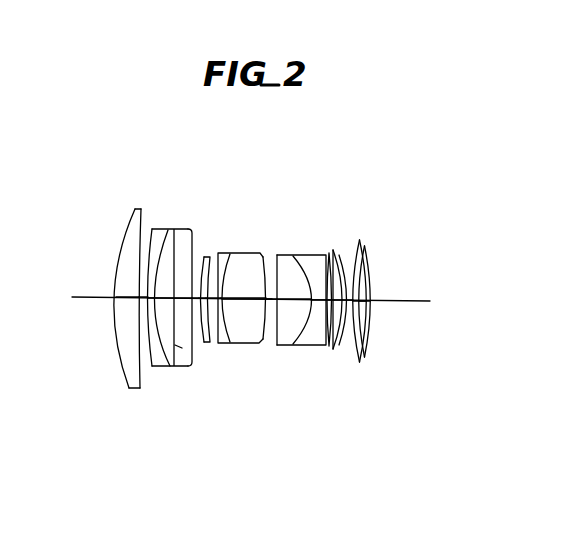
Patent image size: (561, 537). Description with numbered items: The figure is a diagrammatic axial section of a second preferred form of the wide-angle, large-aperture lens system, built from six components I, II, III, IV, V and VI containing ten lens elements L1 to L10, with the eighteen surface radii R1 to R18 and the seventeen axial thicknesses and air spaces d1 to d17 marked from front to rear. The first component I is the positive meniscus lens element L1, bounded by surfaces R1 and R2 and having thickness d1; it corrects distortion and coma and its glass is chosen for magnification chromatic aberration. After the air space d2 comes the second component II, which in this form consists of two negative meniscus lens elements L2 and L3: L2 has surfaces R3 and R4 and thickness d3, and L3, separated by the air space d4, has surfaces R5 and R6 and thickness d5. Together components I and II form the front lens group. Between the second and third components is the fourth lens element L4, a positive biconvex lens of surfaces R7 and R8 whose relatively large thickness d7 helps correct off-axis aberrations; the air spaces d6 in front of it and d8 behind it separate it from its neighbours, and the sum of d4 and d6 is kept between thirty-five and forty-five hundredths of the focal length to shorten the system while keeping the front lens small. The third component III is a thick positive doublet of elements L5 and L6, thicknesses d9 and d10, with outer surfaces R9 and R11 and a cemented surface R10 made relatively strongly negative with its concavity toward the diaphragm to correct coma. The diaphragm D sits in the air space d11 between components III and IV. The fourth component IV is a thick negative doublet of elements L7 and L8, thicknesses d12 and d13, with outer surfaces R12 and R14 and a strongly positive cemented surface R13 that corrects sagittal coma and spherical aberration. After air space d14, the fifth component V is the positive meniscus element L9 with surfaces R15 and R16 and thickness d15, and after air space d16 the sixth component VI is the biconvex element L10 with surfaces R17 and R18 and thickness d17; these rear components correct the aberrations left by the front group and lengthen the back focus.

The first component I is at (85, 358).
The second component II is at (127, 366).
The third component III is at (251, 380).
The fourth component IV is at (358, 379).
The fifth component V is at (400, 374).
The sixth component VI is at (424, 377).
The first lens element L1 is at (85, 341).
The second lens element L2 is at (112, 351).
The third lens element L3 is at (163, 351).
The fourth lens element L4 is at (207, 365).
The fifth lens element L5 is at (248, 363).
The sixth lens element L6 is at (289, 364).
The seventh lens element L7 is at (338, 362).
The eighth lens element L8 is at (371, 364).
The ninth lens element L9 is at (400, 357).
The tenth lens element L10 is at (421, 360).
The first surface radius of curvature R1 is at (127, 368).
The second surface radius of curvature R2 is at (133, 378).
The third surface radius of curvature R3 is at (154, 366).
The fourth surface radius of curvature R4 is at (176, 346).
The fifth surface radius of curvature R5 is at (153, 368).
The sixth surface radius of curvature R6 is at (178, 364).
The seventh surface radius of curvature R7 is at (112, 286).
The eighth surface radius of curvature R8 is at (237, 343).
The ninth surface radius of curvature R9 is at (248, 340).
The cemented surface of the third component R10 is at (247, 340).
The eleventh surface radius of curvature R11 is at (268, 340).
The twelfth surface radius of curvature R12 is at (287, 340).
The cemented surface of the fourth component R13 is at (323, 338).
The fourteenth surface radius of curvature R14 is at (360, 318).
The fifteenth surface radius of curvature R15 is at (350, 330).
The sixteenth surface radius of curvature R16 is at (353, 348).
The seventeenth surface radius of curvature R17 is at (333, 340).
The eighteenth surface radius of curvature R18 is at (360, 363).
The axial thickness of the first lens element d1 is at (119, 270).
The air space between first and second lens elements d2 is at (138, 272).
The axial thickness of the second lens element d3 is at (161, 268).
The air space between second and third lens elements d4 is at (163, 270).
The axial thickness of the third lens element d5 is at (190, 285).
The air space between third and fourth lens elements d6 is at (188, 285).
The axial thickness of the fourth lens element d7 is at (214, 285).
The air space between fourth and fifth lens elements d8 is at (228, 285).
The axial thickness of the fifth lens element d9 is at (251, 285).
The axial thickness of the sixth lens element d10 is at (240, 299).
The air space between third and fourth components d11 is at (272, 262).
The axial thickness of the seventh lens element d12 is at (292, 298).
The axial thickness of the eighth lens element d13 is at (313, 298).
The air space between fourth and fifth components d14 is at (322, 298).
The axial thickness of the ninth lens element d15 is at (345, 298).
The air space between fifth and sixth components d16 is at (358, 298).
The axial thickness of the tenth lens element d17 is at (365, 287).
The diaphragm D is at (267, 262).